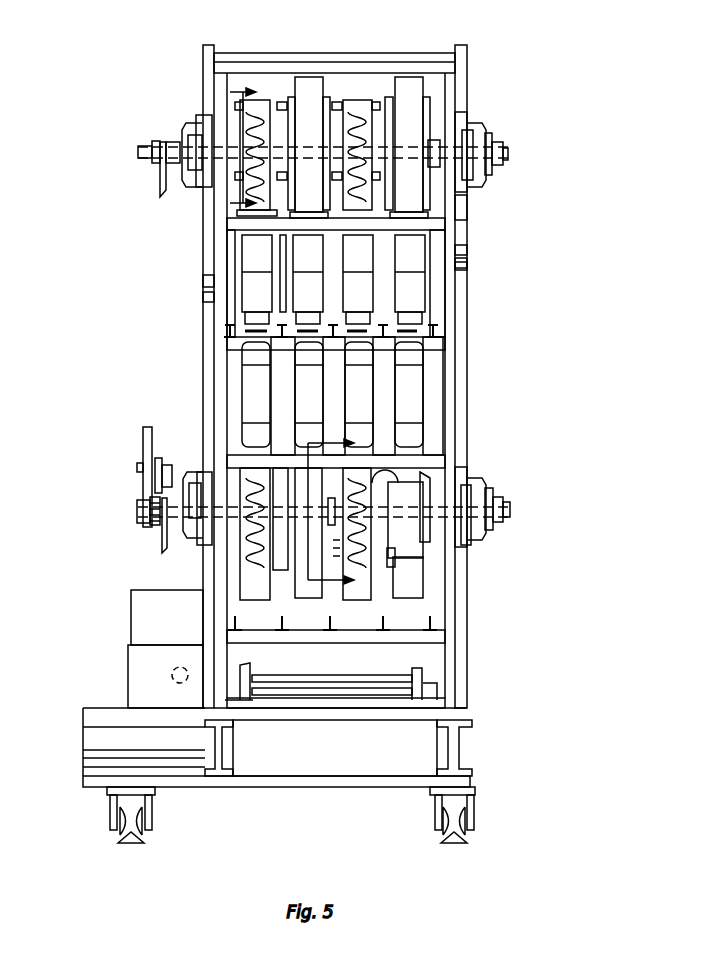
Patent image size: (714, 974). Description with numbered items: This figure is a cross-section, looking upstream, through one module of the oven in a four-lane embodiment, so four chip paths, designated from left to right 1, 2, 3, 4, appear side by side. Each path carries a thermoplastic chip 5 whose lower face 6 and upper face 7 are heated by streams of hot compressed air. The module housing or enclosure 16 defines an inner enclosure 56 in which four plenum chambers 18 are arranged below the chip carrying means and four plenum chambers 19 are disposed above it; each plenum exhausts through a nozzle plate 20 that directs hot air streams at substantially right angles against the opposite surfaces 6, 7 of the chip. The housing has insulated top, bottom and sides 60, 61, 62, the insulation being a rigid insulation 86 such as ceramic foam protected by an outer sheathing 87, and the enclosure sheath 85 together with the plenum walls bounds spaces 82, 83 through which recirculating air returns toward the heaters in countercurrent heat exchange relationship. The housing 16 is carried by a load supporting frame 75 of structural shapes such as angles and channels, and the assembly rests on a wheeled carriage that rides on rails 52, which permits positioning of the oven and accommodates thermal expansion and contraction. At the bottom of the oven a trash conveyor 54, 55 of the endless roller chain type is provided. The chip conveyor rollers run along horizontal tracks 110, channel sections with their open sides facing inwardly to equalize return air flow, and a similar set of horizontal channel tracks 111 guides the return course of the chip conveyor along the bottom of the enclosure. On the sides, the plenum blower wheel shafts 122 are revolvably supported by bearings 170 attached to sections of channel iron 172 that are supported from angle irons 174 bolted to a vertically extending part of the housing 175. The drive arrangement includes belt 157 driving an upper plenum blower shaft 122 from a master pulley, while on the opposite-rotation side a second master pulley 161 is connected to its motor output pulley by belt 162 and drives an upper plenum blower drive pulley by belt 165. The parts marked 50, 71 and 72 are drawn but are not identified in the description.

The first chip path 1 is at (257, 279).
The second chip path 2 is at (308, 279).
The third chip path 3 is at (358, 279).
The fourth chip path 4 is at (410, 279).
The chip 5 is at (422, 338).
The lower face 6 is at (338, 513).
The upper face 7 is at (248, 149).
The enclosure 16 is at (468, 396).
The lower plenum chambers 18 is at (359, 394).
The upper plenum chambers 19 is at (359, 147).
The nozzle plate 20 is at (258, 338).
The base beam 50 is at (462, 748).
The rails 52 is at (135, 845).
The trash conveyor 54 is at (385, 676).
The trash conveyor 55 is at (385, 676).
The enclosure 56 is at (341, 80).
The enclosure top 60 is at (300, 52).
The enclosure bottom 61 is at (338, 728).
The enclosure sides 62 is at (203, 322).
The spring arm 71 is at (283, 585).
The spring assembly 72 is at (240, 586).
The load supporting frame 75 is at (316, 797).
The space between plenum walls and enclosure sheath 82 is at (383, 246).
The space between plenum walls and enclosure sheath 83 is at (228, 248).
The enclosure sheath 85 is at (205, 283).
The rigid insulation 86 is at (205, 297).
The outer sheathing 87 is at (456, 265).
The horizontal tracks 110 is at (433, 337).
The horizontal channel tracks 111 is at (437, 622).
The plenum blower shaft 122 is at (140, 147).
The belt 157 is at (160, 190).
The master pulley 161 is at (160, 528).
The belt 162 is at (165, 550).
The belt 165 is at (145, 430).
The bearing 170 is at (490, 150).
The channel iron 172 is at (186, 128).
The angle irons 174 is at (200, 118).
The vertically extending housing part 175 is at (468, 218).